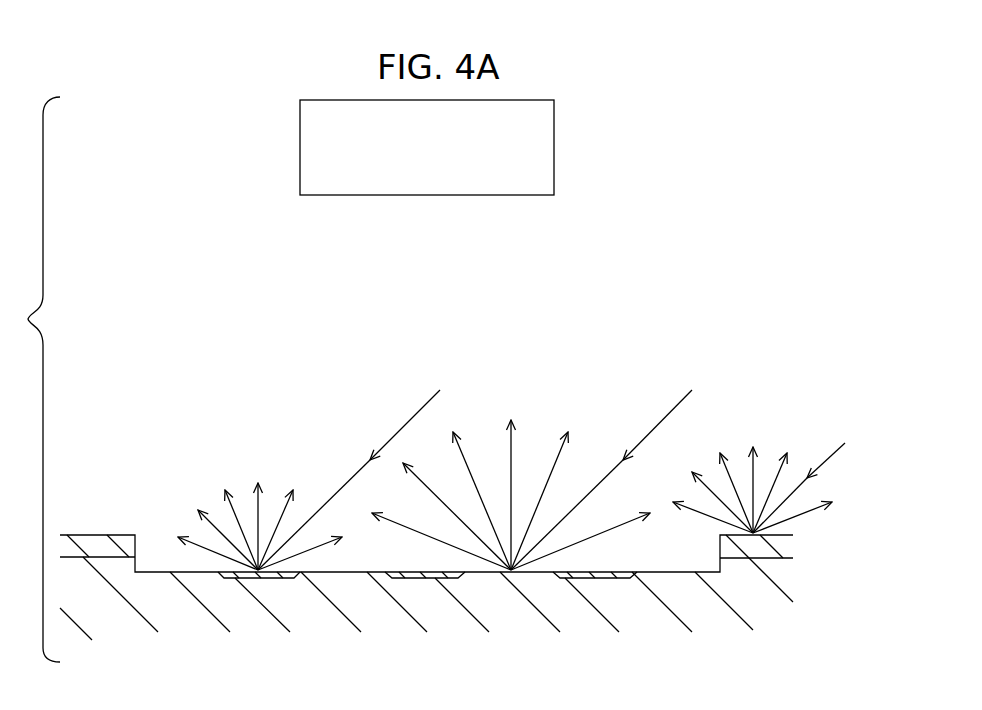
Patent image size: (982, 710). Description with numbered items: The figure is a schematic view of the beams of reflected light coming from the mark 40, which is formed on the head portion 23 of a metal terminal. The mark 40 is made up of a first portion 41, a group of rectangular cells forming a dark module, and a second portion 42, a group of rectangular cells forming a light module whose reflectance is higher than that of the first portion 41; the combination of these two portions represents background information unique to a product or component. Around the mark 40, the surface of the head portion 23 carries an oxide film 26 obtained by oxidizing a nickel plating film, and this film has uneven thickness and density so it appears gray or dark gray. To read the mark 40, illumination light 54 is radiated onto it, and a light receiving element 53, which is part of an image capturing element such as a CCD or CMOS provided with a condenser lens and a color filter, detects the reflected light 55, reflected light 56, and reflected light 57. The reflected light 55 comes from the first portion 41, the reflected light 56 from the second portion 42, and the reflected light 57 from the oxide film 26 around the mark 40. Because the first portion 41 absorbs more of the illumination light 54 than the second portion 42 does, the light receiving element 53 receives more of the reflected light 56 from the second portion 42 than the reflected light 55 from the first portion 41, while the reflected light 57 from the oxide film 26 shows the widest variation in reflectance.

The light receiving element 53 is at (523, 145).
The mark 40 is at (243, 328).
The head portion 23 is at (173, 588).
The first portion 41 is at (237, 580).
The second portion 42 is at (343, 570).
The oxide film 26 is at (760, 545).
The illumination light 54 is at (413, 413).
The reflected light 55 is at (262, 507).
The reflected light 56 is at (512, 458).
The reflected light 57 is at (752, 473).